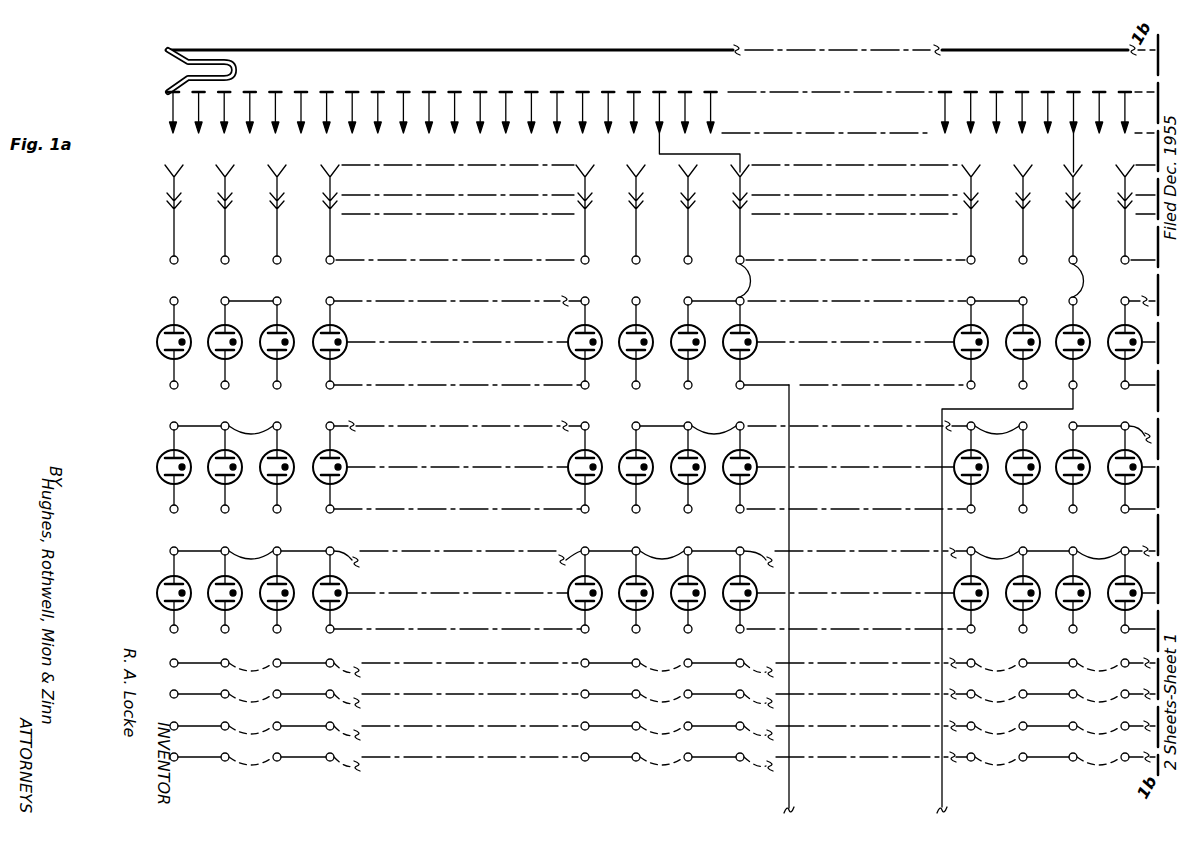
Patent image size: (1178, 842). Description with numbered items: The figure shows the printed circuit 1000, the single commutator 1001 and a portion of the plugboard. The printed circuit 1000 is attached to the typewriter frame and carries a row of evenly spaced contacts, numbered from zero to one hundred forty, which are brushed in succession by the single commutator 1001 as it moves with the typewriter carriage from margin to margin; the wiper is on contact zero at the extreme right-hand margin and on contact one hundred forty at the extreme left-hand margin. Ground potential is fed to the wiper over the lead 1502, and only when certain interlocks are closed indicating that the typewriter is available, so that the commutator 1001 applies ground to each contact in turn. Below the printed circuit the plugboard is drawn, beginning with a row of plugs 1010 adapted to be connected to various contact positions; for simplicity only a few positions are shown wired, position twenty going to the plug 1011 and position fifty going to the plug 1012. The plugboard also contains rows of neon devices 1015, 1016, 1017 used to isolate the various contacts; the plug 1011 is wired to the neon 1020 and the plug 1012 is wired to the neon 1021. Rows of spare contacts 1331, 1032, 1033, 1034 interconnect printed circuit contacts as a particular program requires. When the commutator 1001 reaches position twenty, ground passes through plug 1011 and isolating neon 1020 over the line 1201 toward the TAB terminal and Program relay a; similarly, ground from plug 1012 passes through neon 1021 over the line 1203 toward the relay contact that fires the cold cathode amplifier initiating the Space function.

The printed circuit 1000 is at (163, 100).
The single commutator 1001 is at (236, 70).
The lead 1502 is at (503, 56).
The row of plugs 1010 is at (168, 236).
The plug 1011 is at (745, 180).
The plug 1012 is at (1073, 185).
The first row of tubes 1015 is at (156, 345).
The second row of tubes 1016 is at (158, 466).
The third row of tubes 1017 is at (161, 582).
The neon 1020 is at (758, 336).
The neon 1021 is at (1066, 323).
The switch row 1331 is at (222, 660).
The row of spare contacts 1032 is at (220, 690).
The row of spare contacts 1033 is at (222, 722).
The row of spare contacts 1034 is at (221, 759).
The line 1201 is at (787, 803).
The line 1203 is at (945, 806).